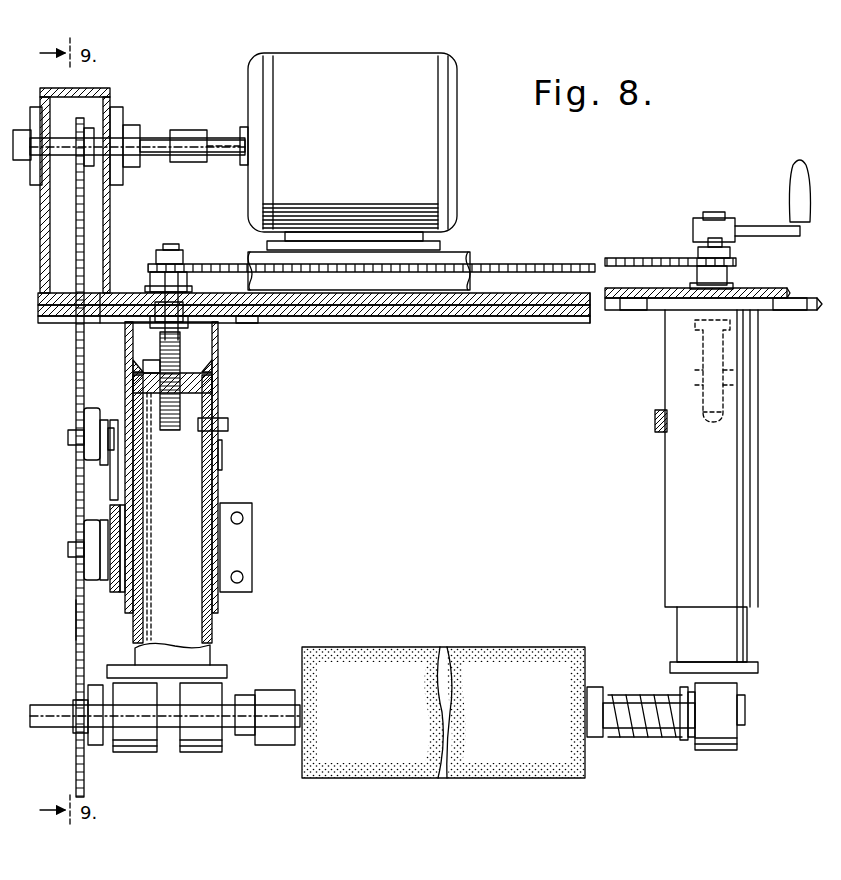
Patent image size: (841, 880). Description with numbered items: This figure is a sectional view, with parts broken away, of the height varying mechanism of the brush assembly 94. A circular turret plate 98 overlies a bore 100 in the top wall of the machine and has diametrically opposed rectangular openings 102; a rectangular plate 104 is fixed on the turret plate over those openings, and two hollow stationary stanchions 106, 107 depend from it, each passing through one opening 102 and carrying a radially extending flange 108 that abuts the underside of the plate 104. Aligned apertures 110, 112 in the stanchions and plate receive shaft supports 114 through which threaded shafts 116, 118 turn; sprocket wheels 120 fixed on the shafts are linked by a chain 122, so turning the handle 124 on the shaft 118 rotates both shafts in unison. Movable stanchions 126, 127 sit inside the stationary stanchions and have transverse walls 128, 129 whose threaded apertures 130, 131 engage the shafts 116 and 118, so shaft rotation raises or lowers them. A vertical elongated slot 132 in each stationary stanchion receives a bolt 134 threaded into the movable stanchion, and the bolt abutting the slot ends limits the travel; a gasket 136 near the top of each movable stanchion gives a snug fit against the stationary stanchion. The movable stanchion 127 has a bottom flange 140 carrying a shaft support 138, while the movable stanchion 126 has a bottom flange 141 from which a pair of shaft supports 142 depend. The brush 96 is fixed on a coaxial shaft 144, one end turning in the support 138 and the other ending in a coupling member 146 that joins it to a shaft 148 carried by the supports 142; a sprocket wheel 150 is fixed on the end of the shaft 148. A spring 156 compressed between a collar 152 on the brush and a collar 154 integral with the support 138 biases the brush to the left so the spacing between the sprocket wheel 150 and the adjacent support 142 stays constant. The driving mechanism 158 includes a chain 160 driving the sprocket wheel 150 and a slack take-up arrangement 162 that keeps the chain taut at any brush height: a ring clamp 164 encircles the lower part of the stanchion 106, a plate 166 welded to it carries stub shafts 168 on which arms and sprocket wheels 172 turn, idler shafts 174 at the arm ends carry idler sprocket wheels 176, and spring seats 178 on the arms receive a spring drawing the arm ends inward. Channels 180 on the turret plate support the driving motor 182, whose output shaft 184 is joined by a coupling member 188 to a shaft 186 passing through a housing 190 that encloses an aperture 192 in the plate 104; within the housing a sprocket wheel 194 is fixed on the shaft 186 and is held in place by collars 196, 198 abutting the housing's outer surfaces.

The brush assembly 94 is at (518, 190).
The brush 96 is at (450, 652).
The turret plate 98 is at (545, 298).
The bore 100 is at (496, 314).
The rectangular openings 102 is at (290, 324).
The rectangular plate 104 is at (134, 298).
The stationary stanchion 106 is at (218, 484).
The stationary stanchion 107 is at (688, 510).
The radially extending flanges 108 is at (250, 318).
The apertures 110 is at (168, 304).
The apertures 112 is at (180, 276).
The shaft supports 114 is at (190, 288).
The threaded shaft 116 is at (162, 424).
The threaded shaft 118 is at (718, 213).
The sprocket wheels 120 is at (168, 250).
The chain 122 is at (612, 258).
The handle 124 is at (772, 228).
The movable stanchion 126 is at (210, 640).
The movable stanchion 127 is at (680, 618).
The transverse wall 128 is at (200, 386).
The transverse wall 129 is at (732, 378).
The threaded aperture 130 is at (138, 388).
The threaded aperture 131 is at (706, 410).
The elongated slot 132 is at (216, 448).
The bolt 134 is at (216, 424).
The gasket 136 is at (210, 368).
The shaft support 138 is at (714, 750).
The bottom transverse flange 140 is at (762, 667).
The bottom transverse flange 141 is at (224, 668).
The shaft supports 142 is at (136, 754).
The brush shaft 144 is at (650, 700).
The coupling member 146 is at (270, 690).
The shaft 148 is at (170, 736).
The sprocket wheel 150 is at (95, 745).
The collar 152 is at (596, 688).
The collar 154 is at (683, 742).
The spring 156 is at (652, 730).
The driving mechanism 158 is at (72, 376).
The chain 160 is at (76, 618).
The slack take-up arrangement 162 is at (108, 418).
The ring clamp 164 is at (228, 592).
The rectangular plate 166 is at (110, 585).
The stub shafts 168 is at (68, 550).
The sprocket wheel 172 is at (90, 522).
The idler shafts 174 is at (70, 437).
The idler sprocket wheels 176 is at (84, 412).
The spring seats 178 is at (110, 455).
The channels 180 is at (470, 258).
The driving motor 182 is at (418, 56).
The output shaft 184 is at (222, 140).
The shaft 186 is at (162, 137).
The coupling member 188 is at (190, 130).
The housing 190 is at (112, 88).
The aperture 192 is at (55, 283).
The sprocket wheel 194 is at (90, 160).
The collar 196 is at (16, 128).
The collar 198 is at (120, 108).